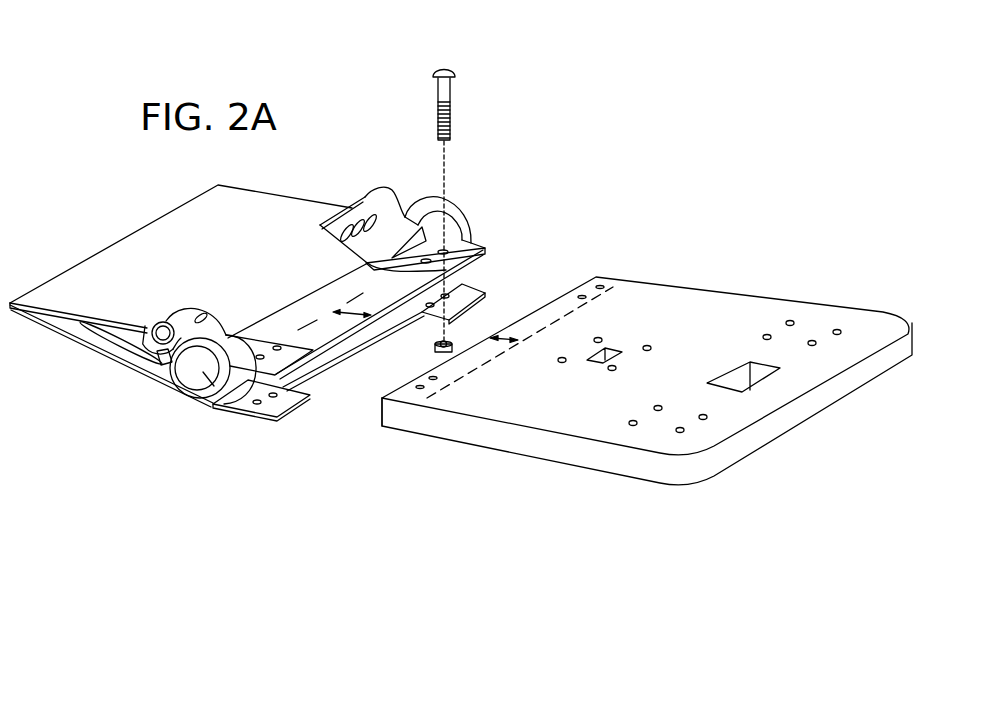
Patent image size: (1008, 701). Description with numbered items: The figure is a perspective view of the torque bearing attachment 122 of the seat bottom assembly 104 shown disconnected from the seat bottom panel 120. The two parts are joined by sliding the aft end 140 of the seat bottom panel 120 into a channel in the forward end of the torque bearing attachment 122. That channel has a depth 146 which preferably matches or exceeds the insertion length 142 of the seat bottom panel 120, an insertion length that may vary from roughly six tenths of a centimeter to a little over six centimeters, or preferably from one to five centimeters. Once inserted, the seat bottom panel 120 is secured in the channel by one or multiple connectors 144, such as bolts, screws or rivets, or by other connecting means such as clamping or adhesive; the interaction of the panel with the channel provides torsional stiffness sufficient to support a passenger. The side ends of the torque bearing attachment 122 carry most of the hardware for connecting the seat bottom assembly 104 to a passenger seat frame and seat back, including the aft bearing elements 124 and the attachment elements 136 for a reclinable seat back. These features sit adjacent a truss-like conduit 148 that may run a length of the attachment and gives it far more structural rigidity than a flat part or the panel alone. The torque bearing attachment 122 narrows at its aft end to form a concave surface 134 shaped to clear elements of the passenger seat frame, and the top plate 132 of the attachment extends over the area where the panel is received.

The seat bottom assembly 104 is at (640, 249).
The seat bottom panel 120 is at (739, 342).
The torque bearing attachment 122 is at (302, 178).
The aft bearing elements 124 is at (211, 388).
The top plate 132 is at (143, 244).
The concave surface 134 is at (103, 344).
The attachment elements 136 is at (160, 322).
The aft end 140 is at (382, 410).
The insertion length 142 is at (510, 339).
The connectors 144 is at (456, 70).
The depth 146 is at (343, 314).
The truss-like conduit 148 is at (163, 371).